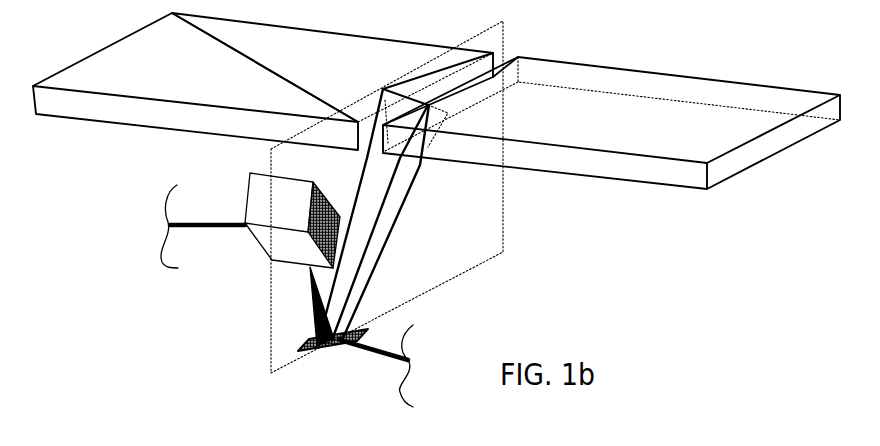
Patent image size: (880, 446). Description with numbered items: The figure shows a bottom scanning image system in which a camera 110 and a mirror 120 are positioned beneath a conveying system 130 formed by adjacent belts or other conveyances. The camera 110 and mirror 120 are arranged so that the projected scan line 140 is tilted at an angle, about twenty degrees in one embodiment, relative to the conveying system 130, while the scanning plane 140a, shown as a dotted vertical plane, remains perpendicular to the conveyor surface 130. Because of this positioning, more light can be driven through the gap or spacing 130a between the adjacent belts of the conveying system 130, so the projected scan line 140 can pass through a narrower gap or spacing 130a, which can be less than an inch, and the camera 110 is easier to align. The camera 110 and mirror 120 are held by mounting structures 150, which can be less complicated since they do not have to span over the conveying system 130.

The camera 110 is at (290, 267).
The mirror 120 is at (327, 352).
The conveying system 130 is at (148, 112).
The gap or spacing 130a is at (478, 70).
The projected scan line 140 is at (315, 313).
The scanning plane 140a is at (432, 287).
The mounting structures 150 is at (220, 215).